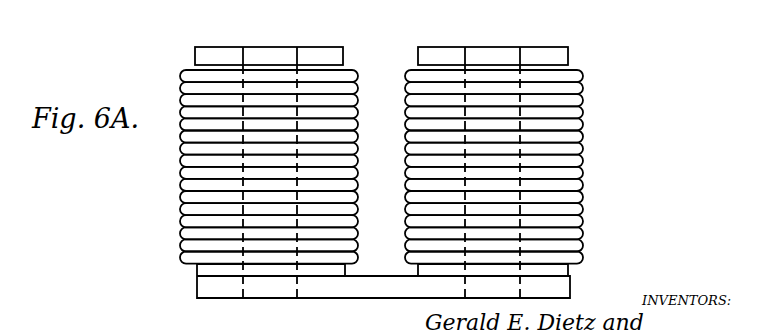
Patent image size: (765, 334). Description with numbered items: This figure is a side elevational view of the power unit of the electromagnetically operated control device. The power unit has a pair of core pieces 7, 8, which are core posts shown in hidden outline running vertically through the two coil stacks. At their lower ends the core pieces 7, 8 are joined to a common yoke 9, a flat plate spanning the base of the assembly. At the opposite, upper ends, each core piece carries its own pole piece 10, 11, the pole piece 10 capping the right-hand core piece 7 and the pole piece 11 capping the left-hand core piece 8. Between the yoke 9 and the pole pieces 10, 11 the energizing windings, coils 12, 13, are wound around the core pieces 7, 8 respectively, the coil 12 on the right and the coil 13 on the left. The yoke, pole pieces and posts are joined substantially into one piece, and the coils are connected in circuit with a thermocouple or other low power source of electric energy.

The core piece 7 is at (522, 110).
The core piece 8 is at (243, 145).
The yoke 9 is at (346, 290).
The pole piece 10 is at (540, 53).
The pole piece 11 is at (310, 53).
The coil 12 is at (570, 132).
The coil 13 is at (194, 234).